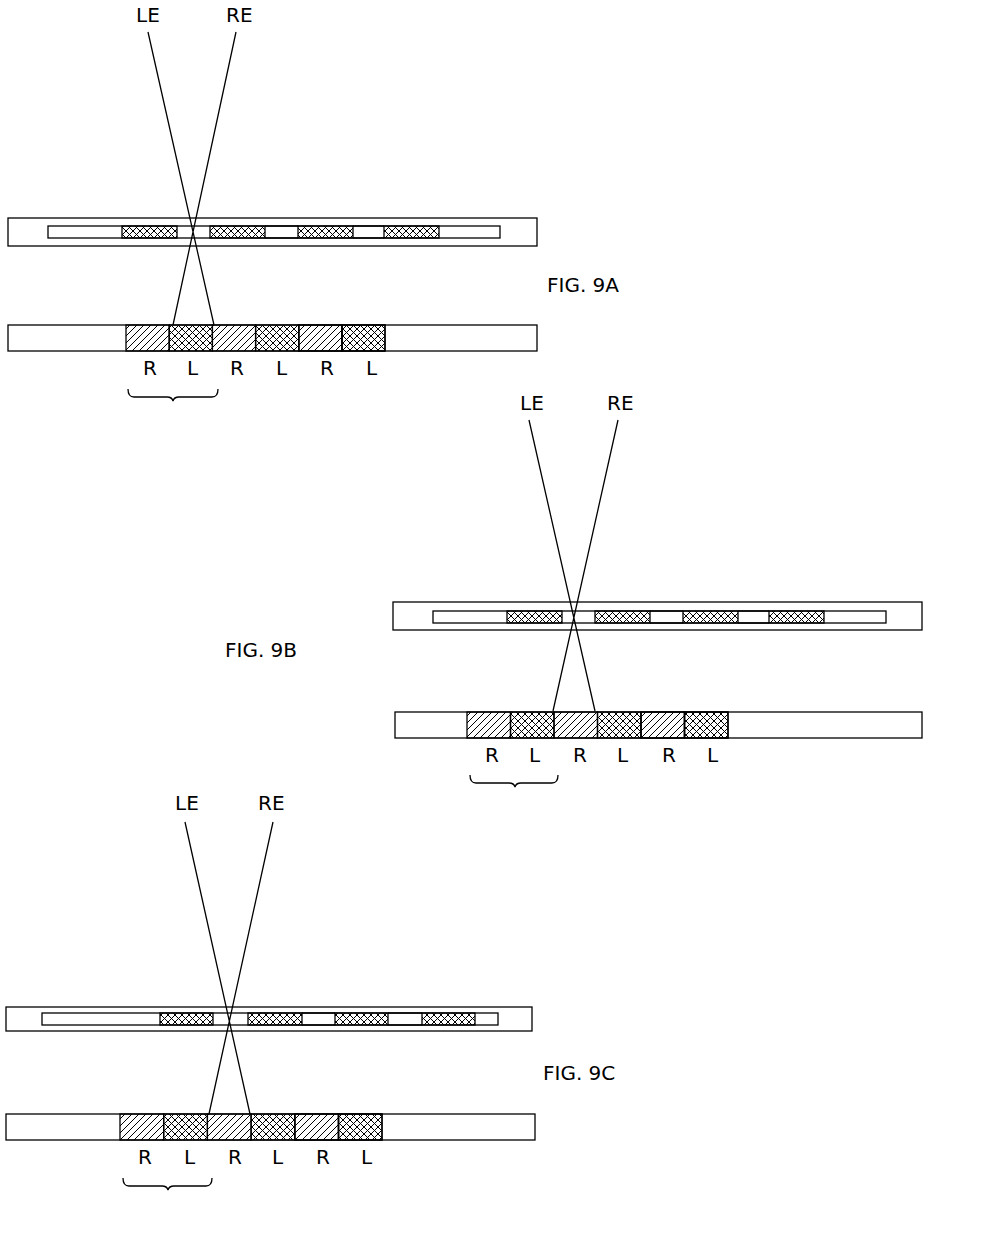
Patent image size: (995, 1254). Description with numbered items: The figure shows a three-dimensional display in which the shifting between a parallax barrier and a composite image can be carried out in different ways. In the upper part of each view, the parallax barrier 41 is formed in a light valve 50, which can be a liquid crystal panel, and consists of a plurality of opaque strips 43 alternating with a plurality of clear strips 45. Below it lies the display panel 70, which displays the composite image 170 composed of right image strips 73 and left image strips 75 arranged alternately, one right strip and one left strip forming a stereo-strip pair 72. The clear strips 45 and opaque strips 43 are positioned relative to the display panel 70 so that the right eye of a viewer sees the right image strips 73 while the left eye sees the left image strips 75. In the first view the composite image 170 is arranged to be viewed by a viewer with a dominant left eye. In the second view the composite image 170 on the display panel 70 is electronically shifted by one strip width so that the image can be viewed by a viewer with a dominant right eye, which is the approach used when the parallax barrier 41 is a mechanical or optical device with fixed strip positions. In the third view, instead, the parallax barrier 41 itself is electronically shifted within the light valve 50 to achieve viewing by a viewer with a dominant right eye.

In FIG. 9A, the parallax barrier 41 is at (96, 225).
In FIG. 9B, the parallax barrier 41 is at (473, 611).
In FIG. 9C, the parallax barrier 41 is at (88, 1013).
In FIG. 9A, the opaque strips 43 is at (250, 226).
In FIG. 9B, the opaque strips 43 is at (637, 611).
In FIG. 9C, the opaque strips 43 is at (297, 1012).
In FIG. 9A, the clear strips 45 is at (282, 232).
In FIG. 9B, the clear strips 45 is at (663, 618).
In FIG. 9C, the clear strips 45 is at (318, 1022).
In FIG. 9A, the light valve 50 is at (450, 220).
In FIG. 9B, the light valve 50 is at (840, 603).
In FIG. 9C, the light valve 50 is at (465, 1007).
In FIG. 9A, the display panel 70 is at (452, 325).
In FIG. 9B, the display panel 70 is at (807, 713).
In FIG. 9C, the display panel 70 is at (418, 1115).
In FIG. 9A, the composite image 170 is at (148, 323).
In FIG. 9B, the composite image 170 is at (490, 712).
In FIG. 9C, the composite image 170 is at (123, 1113).
In FIG. 9A, the stereo-strip pair 72 is at (173, 409).
In FIG. 9B, the stereo-strip pair 72 is at (514, 796).
In FIG. 9C, the stereo-strip pair 72 is at (167, 1199).
In FIG. 9A, the right image strips 73 is at (335, 347).
In FIG. 9B, the right image strips 73 is at (680, 740).
In FIG. 9C, the right image strips 73 is at (335, 1140).
In FIG. 9A, the left image strips 75 is at (380, 348).
In FIG. 9B, the left image strips 75 is at (722, 740).
In FIG. 9C, the left image strips 75 is at (378, 1142).